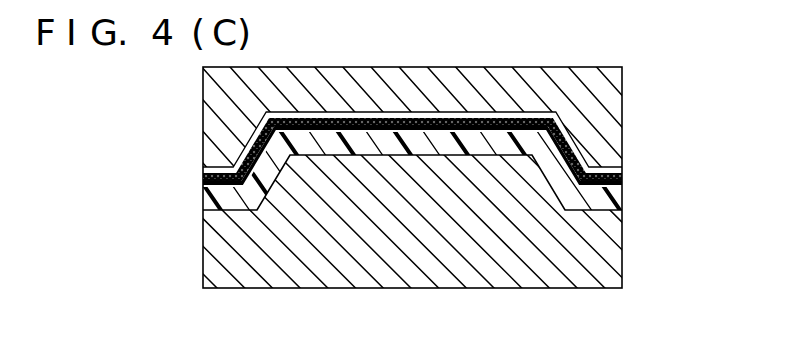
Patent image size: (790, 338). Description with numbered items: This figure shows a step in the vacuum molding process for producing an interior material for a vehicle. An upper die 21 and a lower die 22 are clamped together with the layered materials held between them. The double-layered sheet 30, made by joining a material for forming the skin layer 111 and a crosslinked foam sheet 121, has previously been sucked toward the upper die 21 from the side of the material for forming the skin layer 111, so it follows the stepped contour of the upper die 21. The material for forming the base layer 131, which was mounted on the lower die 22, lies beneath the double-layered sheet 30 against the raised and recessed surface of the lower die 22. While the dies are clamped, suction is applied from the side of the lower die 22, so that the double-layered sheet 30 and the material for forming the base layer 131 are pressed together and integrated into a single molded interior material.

The upper die 21 is at (622, 92).
The lower die 22 is at (622, 242).
The double-layered sheet 30 is at (406, 150).
The material for forming the skin layer 111 is at (619, 165).
The crosslinked foam sheet 121 is at (622, 175).
The material for forming the base layer 131 is at (622, 195).